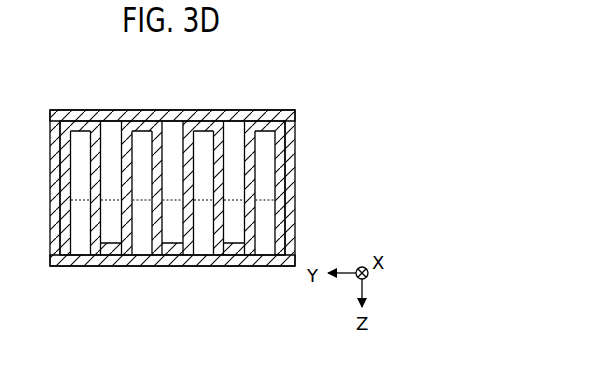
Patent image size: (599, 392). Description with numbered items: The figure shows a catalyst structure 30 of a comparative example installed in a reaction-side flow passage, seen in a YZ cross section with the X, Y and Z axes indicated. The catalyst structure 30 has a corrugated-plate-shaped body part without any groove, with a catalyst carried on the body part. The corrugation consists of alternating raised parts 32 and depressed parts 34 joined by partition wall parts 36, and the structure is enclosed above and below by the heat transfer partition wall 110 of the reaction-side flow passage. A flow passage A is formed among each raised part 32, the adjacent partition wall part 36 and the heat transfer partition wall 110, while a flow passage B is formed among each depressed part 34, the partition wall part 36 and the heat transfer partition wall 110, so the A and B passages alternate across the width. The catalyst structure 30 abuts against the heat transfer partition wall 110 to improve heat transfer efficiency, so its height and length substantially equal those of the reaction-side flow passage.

The catalyst structure 30 is at (151, 188).
The raised part 32 is at (82, 111).
The depressed part 34 is at (176, 256).
The partition wall part 36 is at (85, 227).
The heat transfer partition wall 110 is at (277, 110).